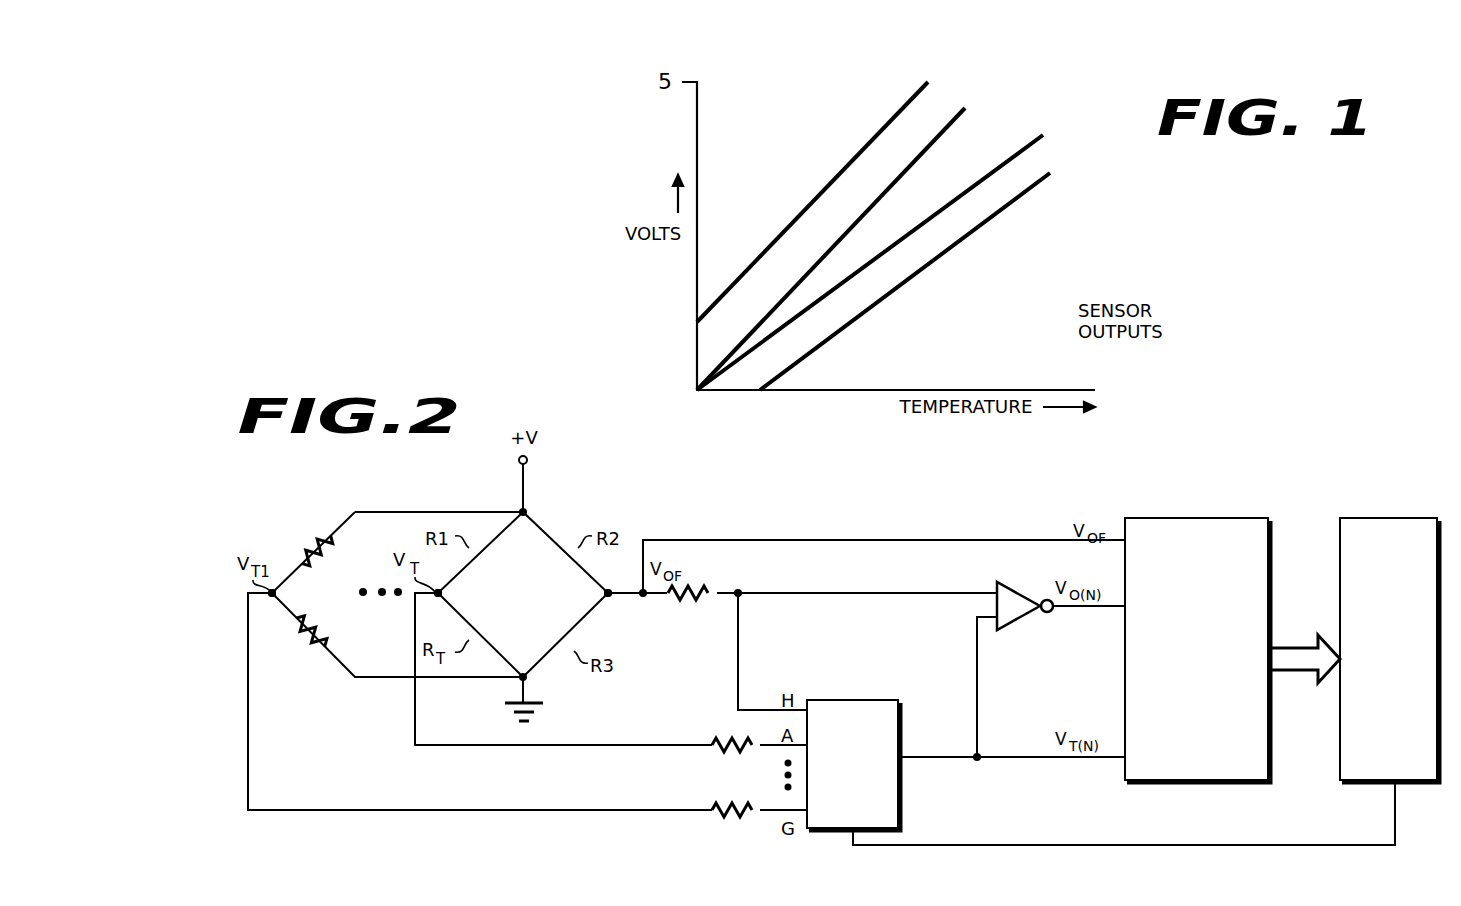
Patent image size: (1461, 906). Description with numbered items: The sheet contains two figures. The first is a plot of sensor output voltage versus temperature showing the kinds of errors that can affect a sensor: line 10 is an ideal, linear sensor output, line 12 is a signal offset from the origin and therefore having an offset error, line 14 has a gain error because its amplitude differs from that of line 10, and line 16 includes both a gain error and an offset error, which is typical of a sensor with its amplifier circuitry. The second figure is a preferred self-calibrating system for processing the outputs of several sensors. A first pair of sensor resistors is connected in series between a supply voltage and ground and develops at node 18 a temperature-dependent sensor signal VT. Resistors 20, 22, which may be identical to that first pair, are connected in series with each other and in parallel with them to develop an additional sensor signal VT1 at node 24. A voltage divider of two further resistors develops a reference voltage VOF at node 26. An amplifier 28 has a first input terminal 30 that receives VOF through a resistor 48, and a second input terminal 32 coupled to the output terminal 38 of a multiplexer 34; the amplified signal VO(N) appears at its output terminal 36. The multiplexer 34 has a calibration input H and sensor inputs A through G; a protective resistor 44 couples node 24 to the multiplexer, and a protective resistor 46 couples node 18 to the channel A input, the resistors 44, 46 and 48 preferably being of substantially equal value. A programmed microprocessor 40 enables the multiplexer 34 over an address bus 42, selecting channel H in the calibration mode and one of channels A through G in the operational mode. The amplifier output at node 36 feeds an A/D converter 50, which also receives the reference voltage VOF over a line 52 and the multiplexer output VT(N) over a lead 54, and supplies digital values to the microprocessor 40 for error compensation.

In FIG. 1, the line 10 is at (1011, 158).
In FIG. 1, the line 12 is at (1008, 206).
In FIG. 1, the line 14 is at (912, 161).
In FIG. 1, the line 16 is at (846, 166).
In FIG. 2, the node 18 is at (448, 594).
In FIG. 2, the resistor 20 is at (305, 549).
In FIG. 2, the resistor 22 is at (308, 651).
In FIG. 2, the node 24 is at (283, 594).
In FIG. 2, the node 26 is at (616, 597).
In FIG. 2, the amplifier 28 is at (1015, 584).
In FIG. 2, the first input terminal 30 is at (974, 591).
In FIG. 2, the second input terminal 32 is at (975, 617).
In FIG. 2, the multiplexer 34 is at (855, 698).
In FIG. 2, the output terminal 36 is at (1083, 609).
In FIG. 2, the output terminal 38 is at (937, 756).
In FIG. 2, the microprocessor 40 is at (1380, 517).
In FIG. 2, the address bus 42 is at (1136, 845).
In FIG. 2, the resistor 44 is at (718, 815).
In FIG. 2, the resistor 46 is at (718, 750).
In FIG. 2, the resistor 48 is at (700, 600).
In FIG. 2, the A/D converter 50 is at (1218, 517).
In FIG. 2, the line 52 is at (918, 539).
In FIG. 2, the lead 54 is at (1066, 760).